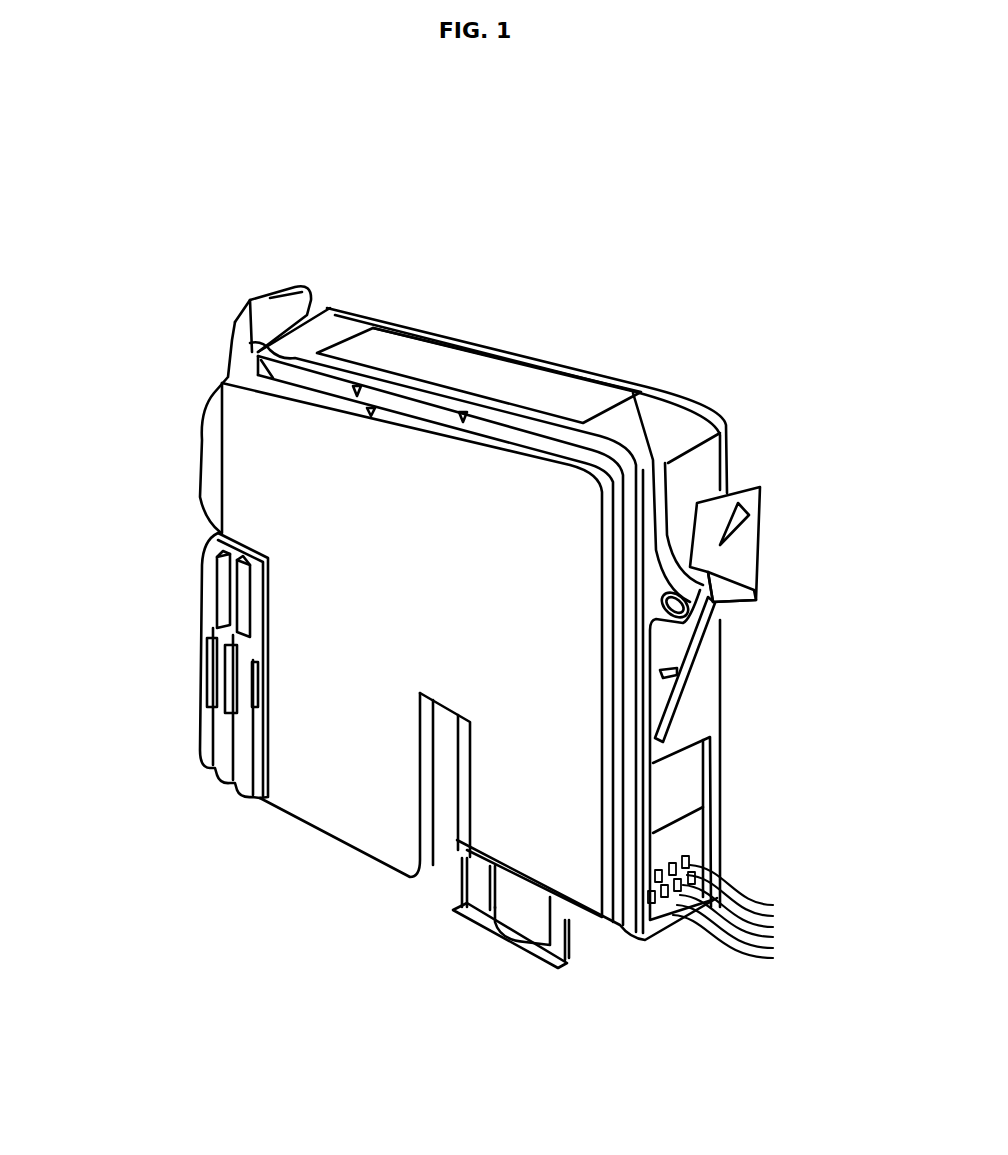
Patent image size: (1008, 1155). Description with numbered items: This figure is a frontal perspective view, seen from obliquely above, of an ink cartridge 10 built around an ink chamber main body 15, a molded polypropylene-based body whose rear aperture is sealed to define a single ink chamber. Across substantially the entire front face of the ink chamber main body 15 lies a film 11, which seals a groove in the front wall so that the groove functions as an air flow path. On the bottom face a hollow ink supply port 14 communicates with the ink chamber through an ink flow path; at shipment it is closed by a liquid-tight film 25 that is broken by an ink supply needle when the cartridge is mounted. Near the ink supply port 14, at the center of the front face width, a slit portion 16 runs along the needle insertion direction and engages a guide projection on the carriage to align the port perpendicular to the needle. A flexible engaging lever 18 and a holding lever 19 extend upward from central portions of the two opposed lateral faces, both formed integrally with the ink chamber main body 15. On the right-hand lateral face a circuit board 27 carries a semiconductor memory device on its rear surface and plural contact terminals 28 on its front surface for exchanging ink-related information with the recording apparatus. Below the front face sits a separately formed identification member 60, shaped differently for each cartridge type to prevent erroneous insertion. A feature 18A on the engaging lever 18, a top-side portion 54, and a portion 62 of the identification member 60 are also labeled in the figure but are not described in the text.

The ink cartridge 10 is at (653, 273).
The film 11 is at (240, 458).
The ink supply port 14 is at (519, 926).
The ink chamber main body 15 is at (653, 433).
The slit portion 16 is at (440, 760).
The flexible engaging lever 18 is at (760, 487).
The engaging projection 18A is at (747, 577).
The holding lever 19 is at (270, 302).
The liquid-tight film 25 is at (556, 962).
The circuit board 27 is at (690, 838).
The contact terminals 28 is at (775, 898).
The top recess 54 is at (410, 393).
The identification member 60 is at (200, 740).
The engagement portion 62 is at (224, 587).